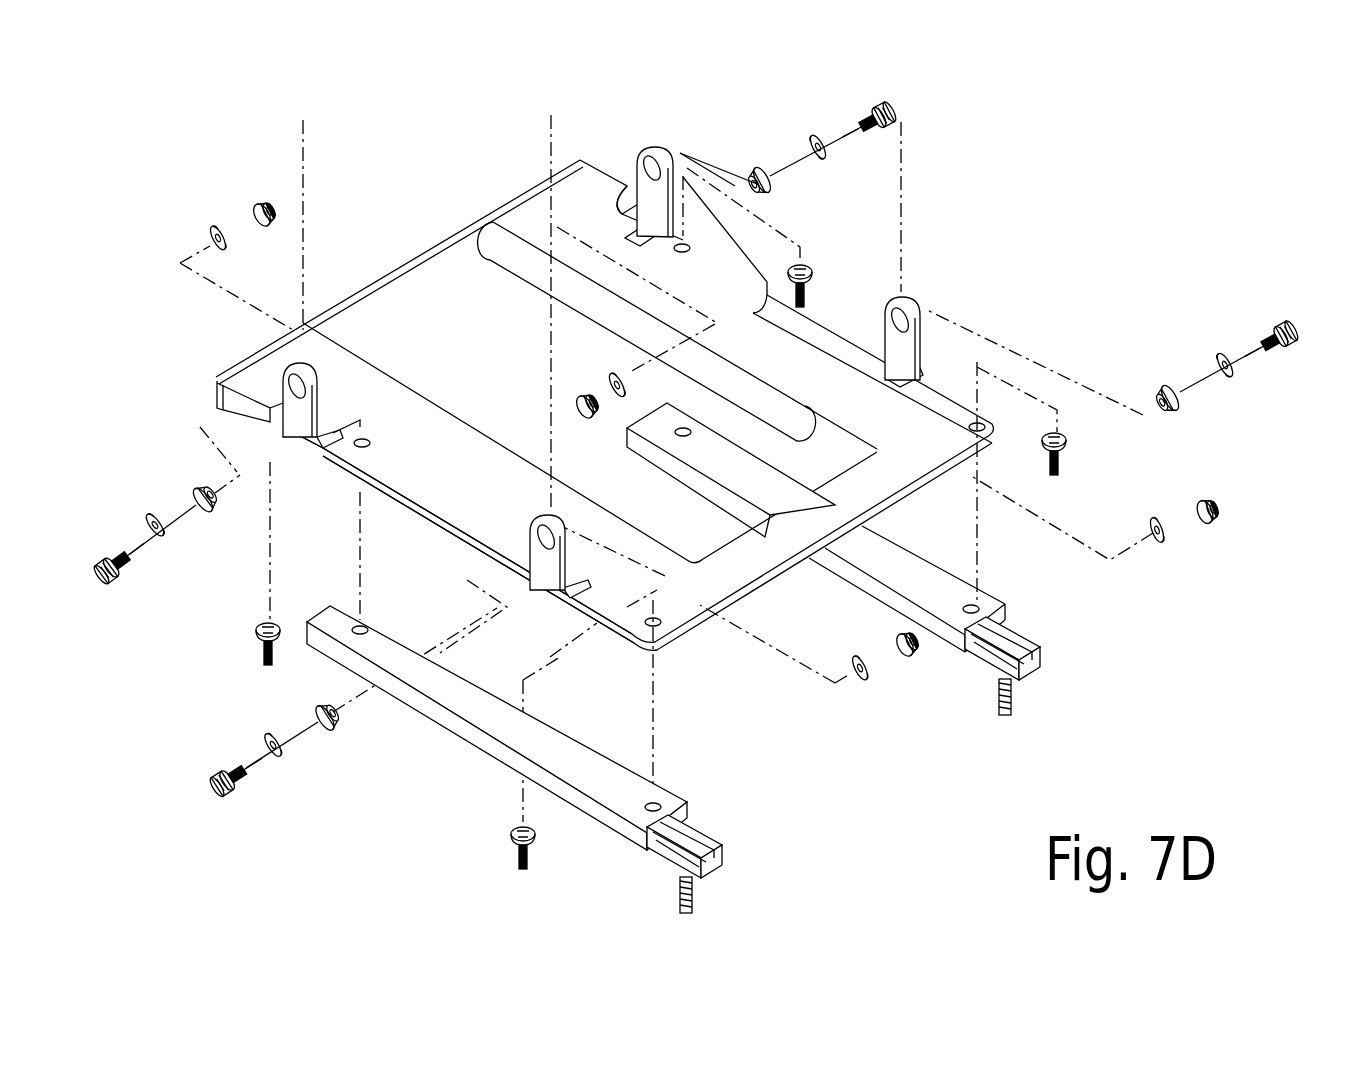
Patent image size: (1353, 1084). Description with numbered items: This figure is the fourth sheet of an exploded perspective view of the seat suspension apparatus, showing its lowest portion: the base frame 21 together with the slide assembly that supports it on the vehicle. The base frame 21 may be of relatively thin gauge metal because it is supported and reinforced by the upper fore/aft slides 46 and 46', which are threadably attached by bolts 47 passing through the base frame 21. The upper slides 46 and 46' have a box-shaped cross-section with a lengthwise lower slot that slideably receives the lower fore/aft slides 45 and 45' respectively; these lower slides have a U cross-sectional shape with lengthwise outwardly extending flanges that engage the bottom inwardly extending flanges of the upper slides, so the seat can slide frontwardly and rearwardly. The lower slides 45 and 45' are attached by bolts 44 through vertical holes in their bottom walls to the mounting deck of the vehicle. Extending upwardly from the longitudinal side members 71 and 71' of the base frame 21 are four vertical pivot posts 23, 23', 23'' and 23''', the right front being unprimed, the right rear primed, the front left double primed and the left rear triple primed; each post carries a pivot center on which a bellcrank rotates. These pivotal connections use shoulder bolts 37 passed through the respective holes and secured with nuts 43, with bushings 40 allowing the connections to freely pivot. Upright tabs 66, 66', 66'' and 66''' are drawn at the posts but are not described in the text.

The base frame 21 is at (414, 470).
The vertical pivot post 23 is at (594, 580).
The vertical pivot post 23' is at (349, 421).
The vertical pivot post 23'' is at (960, 334).
The vertical pivot post 23''' is at (605, 180).
The shoulder bolt 37 is at (866, 112).
The bushing 40 is at (773, 192).
The nut 43 is at (258, 210).
The bolt 44 is at (693, 893).
The lower fore/aft slide 45 is at (717, 836).
The lower fore/aft slide 45' is at (1042, 634).
The upper fore/aft slide 46 is at (497, 728).
The upper fore/aft slide 46' is at (907, 570).
The bolt 47 is at (812, 272).
The upright bracket 66 is at (601, 542).
The upright bracket 66' is at (362, 388).
The upright bracket 66'' is at (928, 307).
The upright bracket 66''' is at (683, 165).
The longitudinal side member 71 is at (478, 545).
The longitudinal side member 71' is at (872, 371).